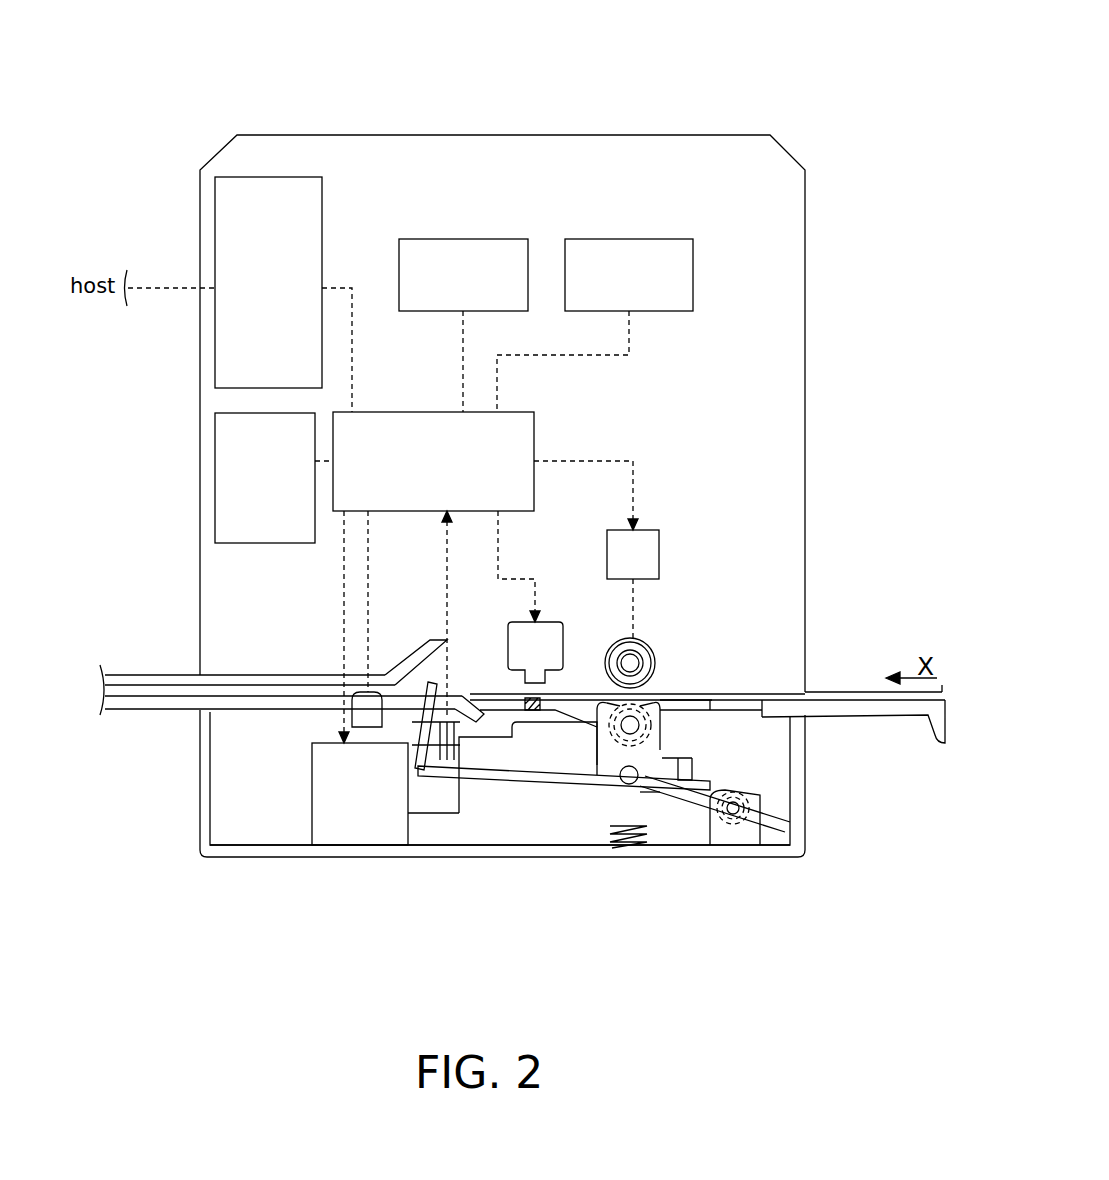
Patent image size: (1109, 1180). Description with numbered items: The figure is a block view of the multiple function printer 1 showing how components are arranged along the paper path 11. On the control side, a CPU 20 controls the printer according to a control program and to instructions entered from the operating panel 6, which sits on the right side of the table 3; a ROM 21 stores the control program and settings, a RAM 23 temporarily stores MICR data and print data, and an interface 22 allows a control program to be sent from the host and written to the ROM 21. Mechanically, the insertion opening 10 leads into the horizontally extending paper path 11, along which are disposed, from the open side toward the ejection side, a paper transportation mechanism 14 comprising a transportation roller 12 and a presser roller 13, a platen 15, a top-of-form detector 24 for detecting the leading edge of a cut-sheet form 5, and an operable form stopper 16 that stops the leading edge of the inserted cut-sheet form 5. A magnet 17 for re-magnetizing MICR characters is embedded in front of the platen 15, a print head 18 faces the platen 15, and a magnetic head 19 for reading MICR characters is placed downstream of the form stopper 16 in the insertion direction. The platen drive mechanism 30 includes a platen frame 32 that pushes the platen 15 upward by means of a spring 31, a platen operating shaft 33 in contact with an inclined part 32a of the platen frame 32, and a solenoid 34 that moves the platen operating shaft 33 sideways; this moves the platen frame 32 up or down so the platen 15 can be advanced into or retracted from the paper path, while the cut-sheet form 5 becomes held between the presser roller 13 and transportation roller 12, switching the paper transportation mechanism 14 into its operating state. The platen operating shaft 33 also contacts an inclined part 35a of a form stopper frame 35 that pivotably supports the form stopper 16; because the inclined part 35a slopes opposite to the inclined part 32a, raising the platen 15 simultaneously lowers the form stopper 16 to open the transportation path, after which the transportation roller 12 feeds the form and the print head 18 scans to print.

The multiple function printer 1 is at (730, 112).
The table 3 is at (812, 715).
The cut-sheet form 5 is at (850, 690).
The operating panel 6 is at (215, 460).
The insertion opening 10 is at (711, 681).
The paper path 11 is at (210, 692).
The transportation roller 12 is at (643, 655).
The presser roller 13 is at (648, 723).
The paper transportation mechanism 14 is at (653, 538).
The platen 15 is at (585, 702).
The form stopper 16 is at (414, 674).
The magnet 17 is at (502, 700).
The print head 18 is at (542, 640).
The magnetic head 19 is at (348, 676).
The CPU 20 is at (534, 420).
The ROM 21 is at (505, 245).
The interface 22 is at (322, 205).
The RAM 23 is at (660, 245).
The top-of-form detector 24 is at (470, 716).
The platen drive mechanism 30 is at (468, 842).
The spring 31 is at (622, 842).
The platen frame 32 is at (507, 808).
The inclined part of platen frame 32a is at (600, 762).
The platen operating shaft 33 is at (655, 760).
The solenoid 34 is at (360, 828).
The form stopper frame 35 is at (700, 832).
The inclined part of form stopper frame 35a is at (675, 790).